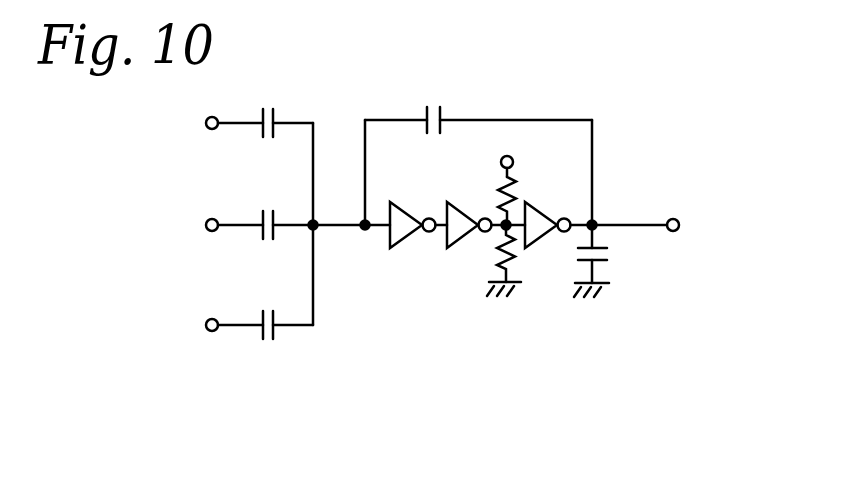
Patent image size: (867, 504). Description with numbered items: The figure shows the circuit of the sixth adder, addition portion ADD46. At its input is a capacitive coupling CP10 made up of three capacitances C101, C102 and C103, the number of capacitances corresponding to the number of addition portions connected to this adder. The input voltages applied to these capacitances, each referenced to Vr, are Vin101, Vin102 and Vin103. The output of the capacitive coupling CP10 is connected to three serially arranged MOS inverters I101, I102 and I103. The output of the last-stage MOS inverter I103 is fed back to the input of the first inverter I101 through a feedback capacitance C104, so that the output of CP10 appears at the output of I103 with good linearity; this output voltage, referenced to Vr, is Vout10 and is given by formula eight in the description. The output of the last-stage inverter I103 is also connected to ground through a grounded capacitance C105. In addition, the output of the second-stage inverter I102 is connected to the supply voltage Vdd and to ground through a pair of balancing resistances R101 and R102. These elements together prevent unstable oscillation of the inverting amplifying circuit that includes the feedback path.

The capacitance C101 is at (265, 111).
The capacitance C102 is at (265, 212).
The capacitance C103 is at (265, 311).
The feedback capacitance C104 is at (478, 105).
The grounded capacitance C105 is at (623, 261).
The balancing resistance R101 is at (500, 176).
The balancing resistance R102 is at (497, 258).
The MOS inverter I101 is at (412, 213).
The MOS inverter I102 is at (482, 213).
The MOS inverter I103 is at (596, 213).
The input voltage Vin101 is at (170, 123).
The input voltage Vin102 is at (170, 225).
The input voltage Vin103 is at (170, 325).
The output Vout10 is at (715, 225).
The supply voltage Vdd is at (531, 161).
The capacitive coupling CP10 is at (358, 309).
The addition portion ADD46 is at (652, 142).